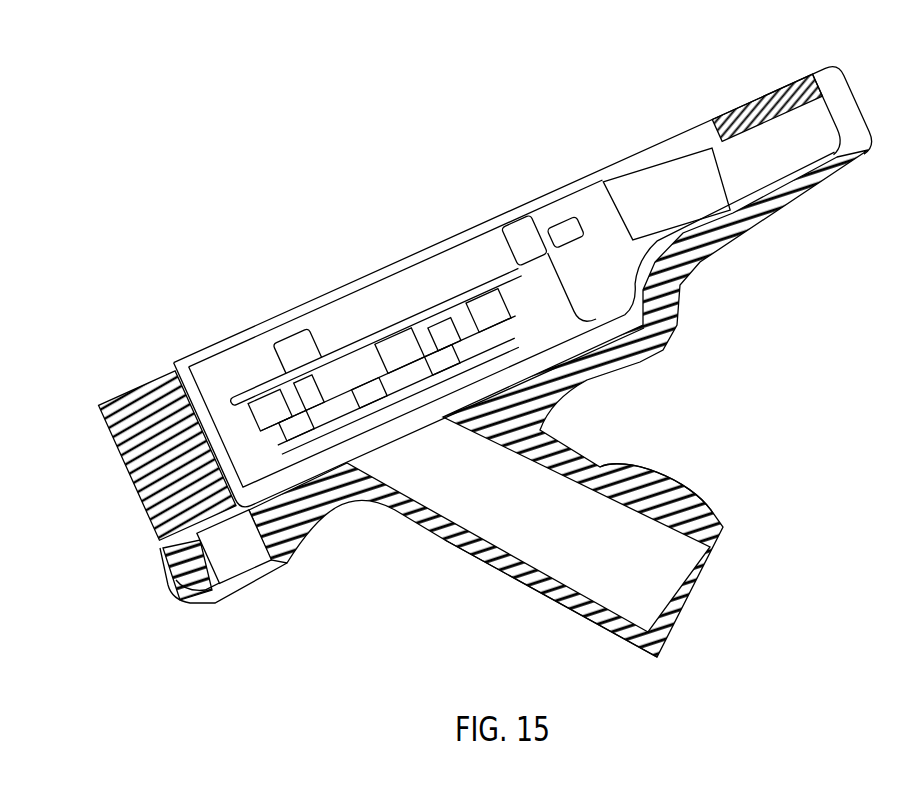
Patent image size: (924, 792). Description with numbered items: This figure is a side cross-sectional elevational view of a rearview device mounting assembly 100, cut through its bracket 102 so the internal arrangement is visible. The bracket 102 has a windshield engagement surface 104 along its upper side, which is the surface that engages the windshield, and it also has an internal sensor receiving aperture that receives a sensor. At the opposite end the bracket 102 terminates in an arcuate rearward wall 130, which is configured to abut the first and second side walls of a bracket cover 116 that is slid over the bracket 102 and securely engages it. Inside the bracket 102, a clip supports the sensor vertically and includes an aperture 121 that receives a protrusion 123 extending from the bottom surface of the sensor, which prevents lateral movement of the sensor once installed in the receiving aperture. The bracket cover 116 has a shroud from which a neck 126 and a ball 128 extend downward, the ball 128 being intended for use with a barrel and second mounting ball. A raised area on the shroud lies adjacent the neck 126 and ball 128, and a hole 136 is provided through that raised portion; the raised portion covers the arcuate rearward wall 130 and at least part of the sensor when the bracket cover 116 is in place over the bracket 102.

The rearview device mounting assembly 100 is at (188, 195).
The bracket 102 is at (766, 95).
The windshield engagement surface 104 is at (557, 203).
The bracket cover 116 is at (630, 362).
The aperture 121 is at (387, 412).
The protrusion 123 is at (427, 415).
The neck 126 is at (457, 540).
The ball 128 is at (703, 491).
The arcuate rearward wall 130 is at (133, 407).
The hole 136 is at (187, 580).